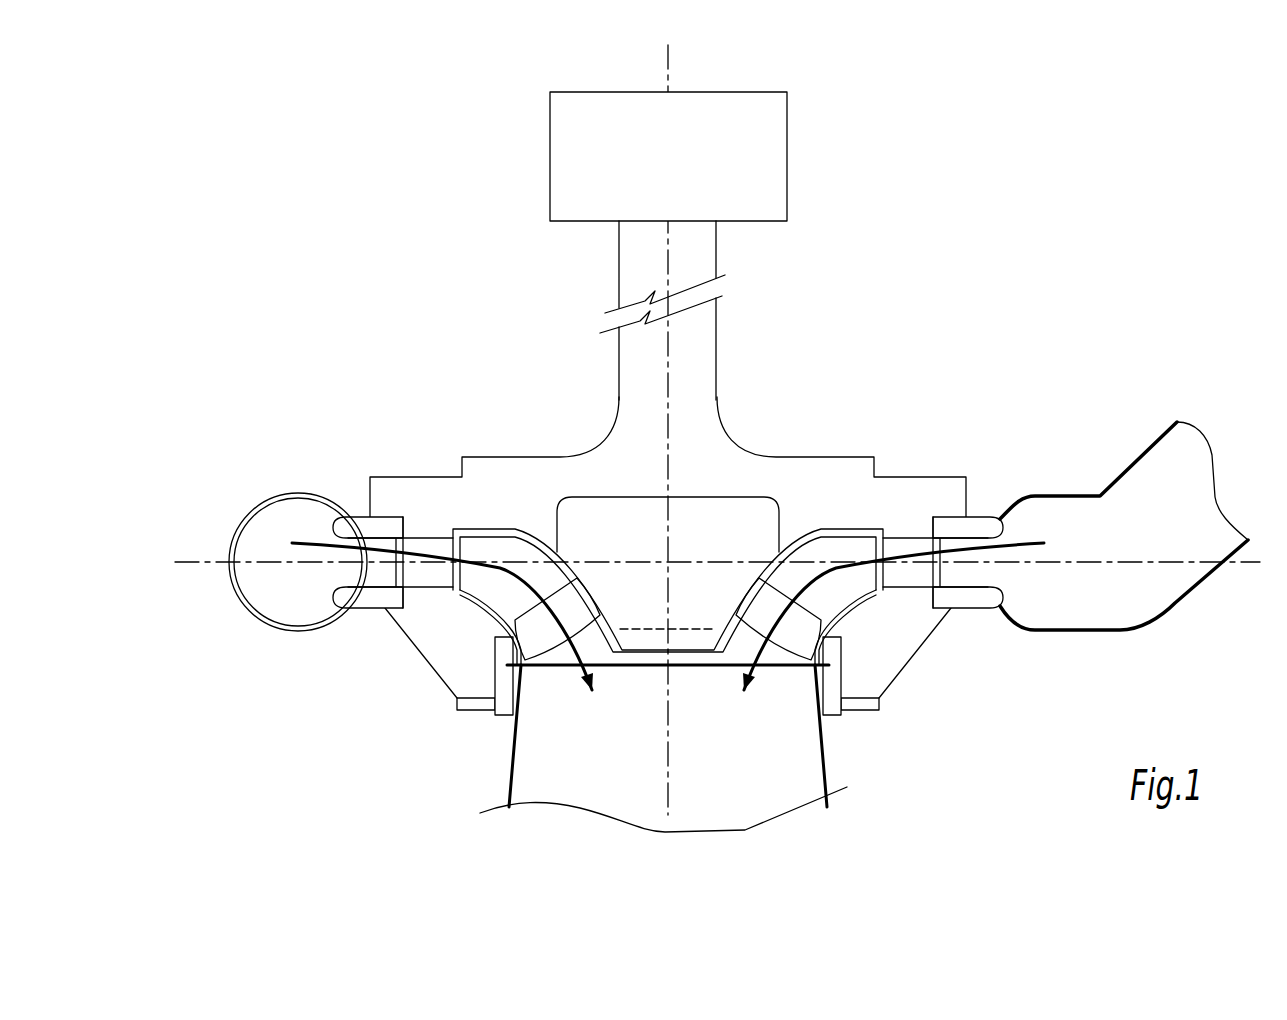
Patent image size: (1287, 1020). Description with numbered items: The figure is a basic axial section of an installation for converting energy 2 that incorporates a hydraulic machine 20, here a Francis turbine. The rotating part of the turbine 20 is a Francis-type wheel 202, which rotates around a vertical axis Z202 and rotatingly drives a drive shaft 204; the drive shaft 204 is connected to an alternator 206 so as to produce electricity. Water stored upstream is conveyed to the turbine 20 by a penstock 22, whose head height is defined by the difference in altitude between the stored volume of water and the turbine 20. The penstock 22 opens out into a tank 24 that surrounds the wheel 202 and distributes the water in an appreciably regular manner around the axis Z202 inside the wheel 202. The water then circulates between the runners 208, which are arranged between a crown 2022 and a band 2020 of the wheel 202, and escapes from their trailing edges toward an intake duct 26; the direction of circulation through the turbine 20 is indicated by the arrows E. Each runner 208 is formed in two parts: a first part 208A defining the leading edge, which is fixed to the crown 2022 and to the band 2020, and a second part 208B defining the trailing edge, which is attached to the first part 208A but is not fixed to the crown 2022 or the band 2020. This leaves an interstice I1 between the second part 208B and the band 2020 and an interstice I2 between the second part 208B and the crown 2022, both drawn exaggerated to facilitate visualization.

The installation for converting energy 2 is at (704, 435).
The hydraulic machine 20 is at (698, 581).
The penstock 22 is at (1172, 452).
The tank 24 is at (247, 542).
The intake duct 26 is at (663, 748).
The Francis-type wheel 202 is at (483, 592).
The band 2020 is at (478, 615).
The crown 2022 is at (535, 545).
The drive shaft 204 is at (640, 245).
The alternator 206 is at (668, 156).
The runners 208 is at (1024, 662).
The first part 208A is at (835, 597).
The second part 208B is at (825, 652).
The vertical axis Z202 is at (717, 426).
The arrows E is at (668, 627).
The interstice I1 is at (527, 670).
The interstice I2 is at (603, 627).